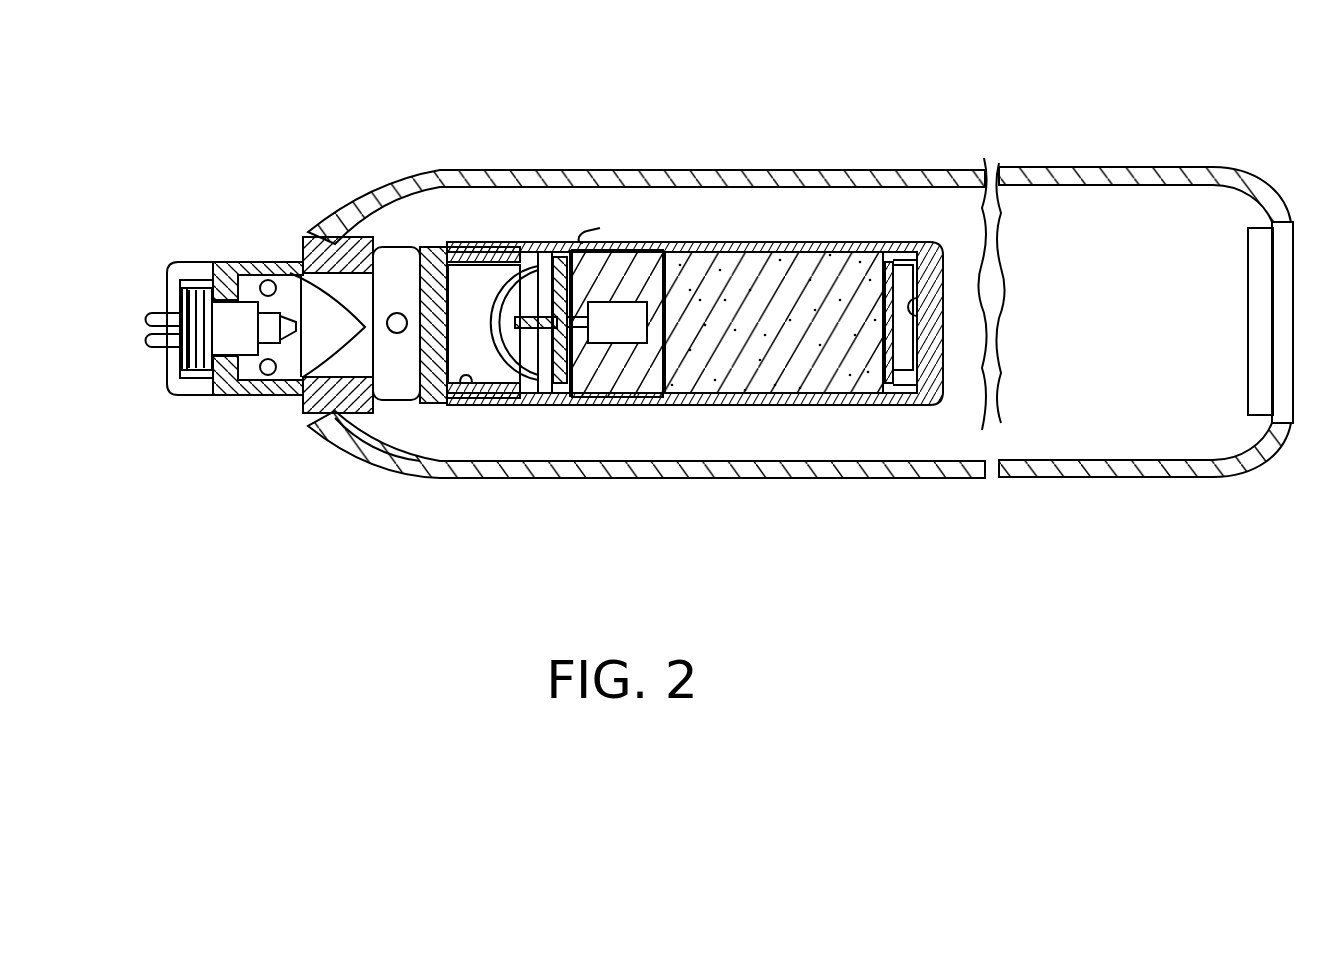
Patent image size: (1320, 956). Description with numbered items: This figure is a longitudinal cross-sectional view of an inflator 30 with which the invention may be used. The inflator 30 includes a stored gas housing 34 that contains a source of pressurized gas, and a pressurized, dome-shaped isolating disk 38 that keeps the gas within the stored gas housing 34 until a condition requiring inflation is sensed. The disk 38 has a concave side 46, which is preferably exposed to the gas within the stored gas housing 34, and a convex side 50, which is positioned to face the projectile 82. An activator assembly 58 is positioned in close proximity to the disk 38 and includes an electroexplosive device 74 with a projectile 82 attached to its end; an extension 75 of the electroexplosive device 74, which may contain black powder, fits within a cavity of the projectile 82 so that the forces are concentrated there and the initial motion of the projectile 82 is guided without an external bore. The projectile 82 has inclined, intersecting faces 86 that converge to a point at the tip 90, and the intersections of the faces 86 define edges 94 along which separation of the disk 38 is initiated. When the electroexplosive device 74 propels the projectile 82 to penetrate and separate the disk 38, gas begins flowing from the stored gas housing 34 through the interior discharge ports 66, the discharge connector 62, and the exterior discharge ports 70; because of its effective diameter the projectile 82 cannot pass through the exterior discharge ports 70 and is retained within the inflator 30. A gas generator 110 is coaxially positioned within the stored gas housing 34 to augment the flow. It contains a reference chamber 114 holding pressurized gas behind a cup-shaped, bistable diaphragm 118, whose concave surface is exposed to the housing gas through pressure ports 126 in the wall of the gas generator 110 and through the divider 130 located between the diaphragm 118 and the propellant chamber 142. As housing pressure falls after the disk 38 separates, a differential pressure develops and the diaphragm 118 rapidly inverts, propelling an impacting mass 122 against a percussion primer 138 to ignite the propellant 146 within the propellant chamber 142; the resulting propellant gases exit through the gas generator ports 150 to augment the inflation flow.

The inflator 30 is at (509, 187).
The stored gas housing 34 is at (1111, 167).
The isolating disk 38 is at (290, 295).
The concave side 46 is at (340, 430).
The convex side 50 is at (375, 247).
The activator assembly 58 is at (244, 292).
The discharge connector 62 is at (288, 385).
The interior discharge ports 66 is at (407, 313).
The exterior discharge ports 70 is at (258, 368).
The electroexplosive device 74 is at (200, 268).
The extension 75 is at (150, 322).
The projectile 82 is at (296, 345).
The faces 86 is at (303, 272).
The tip 90 is at (368, 272).
The edges 94 is at (188, 392).
The gas generator 110 is at (730, 405).
The reference chamber 114 is at (455, 403).
The bistable diaphragm 118 is at (503, 400).
The impacting mass 122 is at (527, 252).
The pressure ports 126 is at (587, 240).
The divider 130 is at (545, 405).
The percussion primer 138 is at (590, 400).
The propellant chamber 142 is at (818, 392).
The propellant 146 is at (815, 247).
The gas generator ports 150 is at (932, 312).